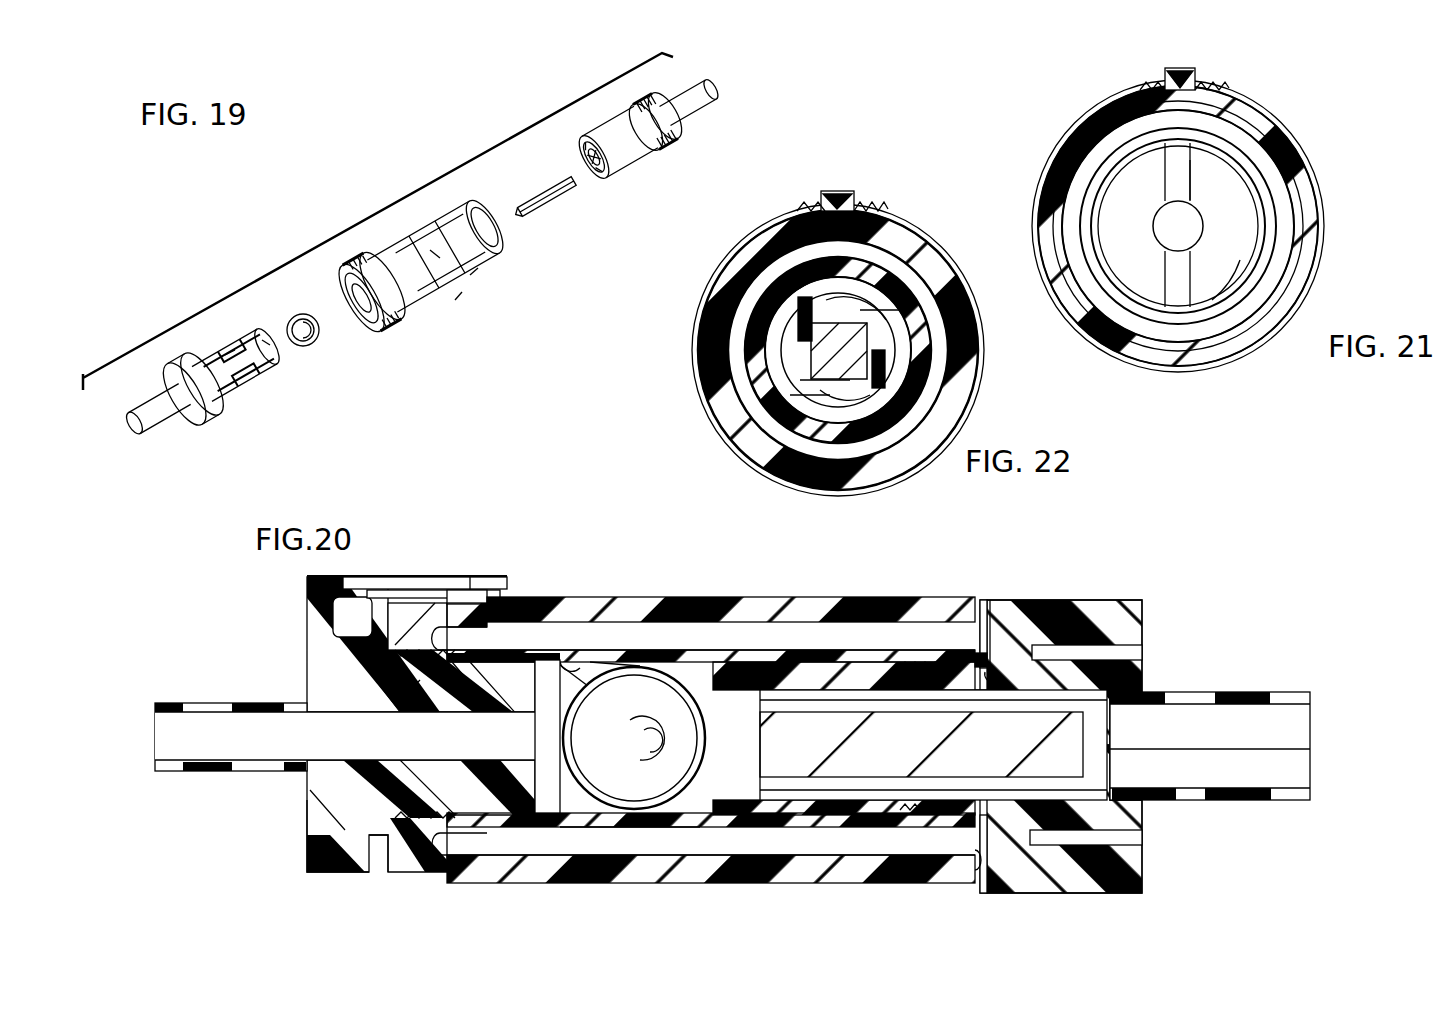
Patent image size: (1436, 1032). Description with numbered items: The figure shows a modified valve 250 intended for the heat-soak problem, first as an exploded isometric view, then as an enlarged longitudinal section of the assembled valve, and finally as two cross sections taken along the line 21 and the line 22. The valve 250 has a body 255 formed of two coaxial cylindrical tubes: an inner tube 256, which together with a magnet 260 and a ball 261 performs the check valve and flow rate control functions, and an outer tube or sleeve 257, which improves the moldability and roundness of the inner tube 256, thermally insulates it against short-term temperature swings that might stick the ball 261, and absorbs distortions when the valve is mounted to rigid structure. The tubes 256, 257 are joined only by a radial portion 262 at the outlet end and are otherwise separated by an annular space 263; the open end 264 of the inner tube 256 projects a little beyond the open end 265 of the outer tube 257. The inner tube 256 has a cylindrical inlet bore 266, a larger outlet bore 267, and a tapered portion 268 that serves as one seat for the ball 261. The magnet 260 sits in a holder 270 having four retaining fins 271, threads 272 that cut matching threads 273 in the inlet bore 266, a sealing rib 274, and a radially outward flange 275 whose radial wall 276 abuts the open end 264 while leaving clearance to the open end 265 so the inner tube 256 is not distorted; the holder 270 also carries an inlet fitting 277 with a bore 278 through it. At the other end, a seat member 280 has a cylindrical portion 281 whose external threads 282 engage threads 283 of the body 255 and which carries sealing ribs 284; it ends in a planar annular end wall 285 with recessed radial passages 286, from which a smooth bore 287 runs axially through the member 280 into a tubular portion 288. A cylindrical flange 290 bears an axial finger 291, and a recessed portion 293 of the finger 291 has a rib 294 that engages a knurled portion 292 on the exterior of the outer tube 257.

In FIG. 20, the section line 21 is at (563, 513).
In FIG. 20, the section line 22 is at (838, 548).
In FIG. 19, the valve 250 is at (374, 218).
In FIG. 20, the valve 250 is at (648, 550).
In FIG. 19, the body 255 is at (395, 344).
In FIG. 22, the body 255 is at (690, 393).
In FIG. 21, the body 255 is at (1300, 130).
In FIG. 20, the body 255 is at (740, 885).
In FIG. 19, the inner tube 256 is at (470, 275).
In FIG. 22, the inner tube 256 is at (962, 386).
In FIG. 21, the inner tube 256 is at (1272, 268).
In FIG. 20, the inner tube 256 is at (782, 626).
In FIG. 19, the outer tube or sleeve 257 is at (430, 250).
In FIG. 22, the outer tube or sleeve 257 is at (972, 366).
In FIG. 21, the outer tube or sleeve 257 is at (1316, 252).
In FIG. 20, the outer tube or sleeve 257 is at (805, 615).
In FIG. 19, the magnet 260 is at (560, 220).
In FIG. 22, the magnet 260 is at (854, 322).
In FIG. 20, the magnet 260 is at (890, 739).
In FIG. 19, the ball 261 is at (310, 346).
In FIG. 20, the ball 261 is at (616, 745).
In FIG. 20, the radial portion 262 is at (420, 850).
In FIG. 22, the annular space 263 is at (935, 402).
In FIG. 21, the annular space 263 is at (1198, 344).
In FIG. 20, the annular space 263 is at (680, 645).
In FIG. 20, the open end of inner tube 264 is at (1030, 580).
In FIG. 20, the open end of outer tube 265 is at (978, 600).
In FIG. 20, the inlet bore 266 is at (990, 686).
In FIG. 21, the outlet bore 267 is at (1247, 292).
In FIG. 20, the outlet bore 267 is at (562, 660).
In FIG. 20, the tapered portion 268 is at (565, 828).
In FIG. 19, the holder 270 is at (683, 178).
In FIG. 22, the holder 270 is at (770, 398).
In FIG. 20, the holder 270 is at (1135, 635).
In FIG. 22, the retaining fins 271 is at (780, 428).
In FIG. 20, the retaining fins 271 is at (950, 700).
In FIG. 20, the threads 272 is at (912, 656).
In FIG. 20, the matching threads 273 is at (912, 812).
In FIG. 19, the sealing rib 274 is at (455, 300).
In FIG. 22, the sealing rib 274 is at (885, 432).
In FIG. 20, the sealing rib 274 is at (832, 812).
In FIG. 20, the flange 275 is at (1020, 880).
In FIG. 20, the radial wall 276 is at (976, 890).
In FIG. 19, the inlet fitting 277 is at (700, 98).
In FIG. 20, the inlet fitting 277 is at (1240, 690).
In FIG. 20, the bore 278 is at (1215, 712).
In FIG. 19, the seat member 280 is at (245, 402).
In FIG. 20, the seat member 280 is at (318, 636).
In FIG. 20, the cylindrical portion 281 is at (462, 712).
In FIG. 20, the external threads 282 is at (412, 655).
In FIG. 20, the threads 283 is at (375, 855).
In FIG. 21, the sealing ribs 284 is at (1268, 222).
In FIG. 20, the sealing ribs 284 is at (562, 672).
In FIG. 21, the end wall 285 is at (1220, 209).
In FIG. 20, the end wall 285 is at (616, 656).
In FIG. 19, the radial passages 286 is at (262, 340).
In FIG. 21, the radial passages 286 is at (1175, 176).
In FIG. 20, the radial passages 286 is at (540, 718).
In FIG. 21, the bore 287 is at (1165, 238).
In FIG. 20, the bore 287 is at (350, 714).
In FIG. 19, the tubular portion 288 is at (150, 430).
In FIG. 20, the tubular portion 288 is at (240, 700).
In FIG. 20, the cylindrical flange 290 is at (318, 800).
In FIG. 19, the axial finger 291 is at (225, 355).
In FIG. 22, the axial finger 291 is at (845, 190).
In FIG. 21, the axial finger 291 is at (1175, 66).
In FIG. 20, the axial finger 291 is at (380, 578).
In FIG. 22, the knurled portion 292 is at (862, 208).
In FIG. 21, the knurled portion 292 is at (1216, 91).
In FIG. 20, the knurled portion 292 is at (490, 585).
In FIG. 20, the recessed portion 293 is at (470, 560).
In FIG. 20, the rib 294 is at (490, 598).